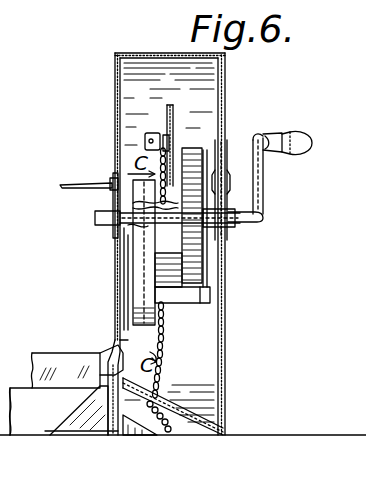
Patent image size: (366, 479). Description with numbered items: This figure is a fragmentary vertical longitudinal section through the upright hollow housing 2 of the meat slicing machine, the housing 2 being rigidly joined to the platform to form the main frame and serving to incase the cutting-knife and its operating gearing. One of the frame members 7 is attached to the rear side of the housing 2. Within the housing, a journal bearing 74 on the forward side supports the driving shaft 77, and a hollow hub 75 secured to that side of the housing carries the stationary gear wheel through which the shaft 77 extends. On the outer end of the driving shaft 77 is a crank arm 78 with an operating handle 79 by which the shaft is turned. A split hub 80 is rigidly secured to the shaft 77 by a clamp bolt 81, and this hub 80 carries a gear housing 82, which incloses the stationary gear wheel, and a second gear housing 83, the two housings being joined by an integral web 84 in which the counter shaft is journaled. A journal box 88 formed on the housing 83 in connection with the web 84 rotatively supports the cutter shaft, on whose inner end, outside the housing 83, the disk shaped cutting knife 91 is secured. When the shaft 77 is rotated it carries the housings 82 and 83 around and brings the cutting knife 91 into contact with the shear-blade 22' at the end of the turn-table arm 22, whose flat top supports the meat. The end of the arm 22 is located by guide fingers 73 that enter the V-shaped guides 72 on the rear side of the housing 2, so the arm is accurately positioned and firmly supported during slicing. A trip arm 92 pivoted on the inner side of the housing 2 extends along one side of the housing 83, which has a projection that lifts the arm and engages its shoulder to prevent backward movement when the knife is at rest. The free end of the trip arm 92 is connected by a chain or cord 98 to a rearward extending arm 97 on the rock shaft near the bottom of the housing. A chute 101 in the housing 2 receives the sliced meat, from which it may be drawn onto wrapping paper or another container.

The housing 2 is at (116, 106).
The frame member 7 is at (74, 182).
The arm 22 is at (183, 378).
The shear-blade 22' is at (96, 349).
The V-shaped guide 72 is at (93, 408).
The guide finger 73 is at (108, 420).
The journal bearing 74 is at (97, 219).
The hollow hub 75 is at (216, 246).
The driving shaft 77 is at (255, 224).
The crank arm 78 is at (265, 181).
The operating handle 79 is at (272, 136).
The hub 80 is at (121, 257).
The clamp bolt 81 is at (138, 203).
The gear housing 82 is at (195, 149).
The gear housing 83 is at (140, 288).
The web 84 is at (165, 231).
The journal box 88 is at (178, 300).
The cutting knife 91 is at (132, 242).
The trip arm 92 is at (174, 108).
The arm 97 is at (143, 433).
The chain or cord 98 is at (185, 343).
The chute 101 is at (192, 432).